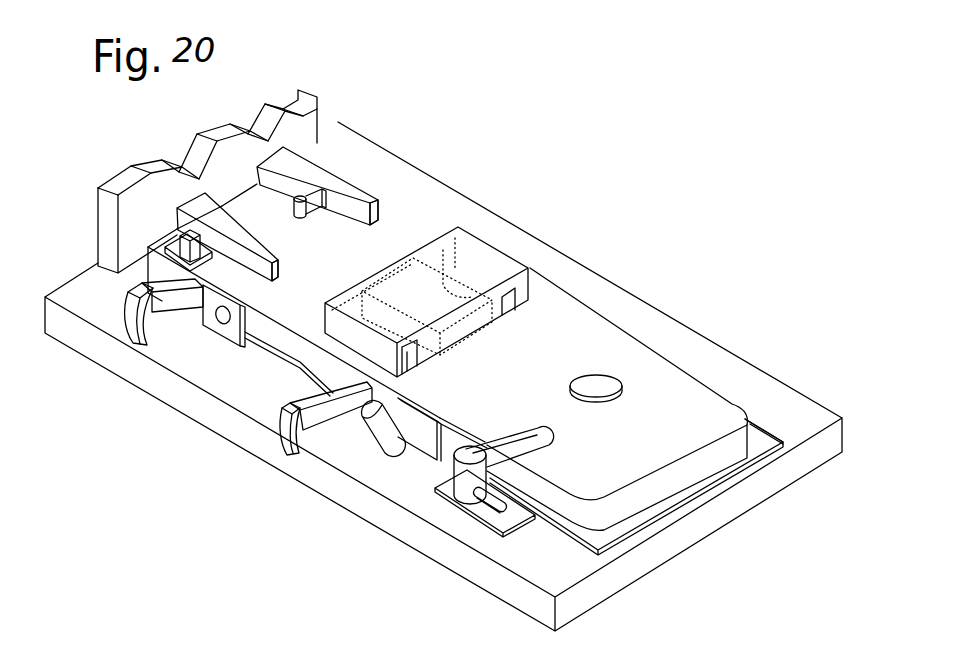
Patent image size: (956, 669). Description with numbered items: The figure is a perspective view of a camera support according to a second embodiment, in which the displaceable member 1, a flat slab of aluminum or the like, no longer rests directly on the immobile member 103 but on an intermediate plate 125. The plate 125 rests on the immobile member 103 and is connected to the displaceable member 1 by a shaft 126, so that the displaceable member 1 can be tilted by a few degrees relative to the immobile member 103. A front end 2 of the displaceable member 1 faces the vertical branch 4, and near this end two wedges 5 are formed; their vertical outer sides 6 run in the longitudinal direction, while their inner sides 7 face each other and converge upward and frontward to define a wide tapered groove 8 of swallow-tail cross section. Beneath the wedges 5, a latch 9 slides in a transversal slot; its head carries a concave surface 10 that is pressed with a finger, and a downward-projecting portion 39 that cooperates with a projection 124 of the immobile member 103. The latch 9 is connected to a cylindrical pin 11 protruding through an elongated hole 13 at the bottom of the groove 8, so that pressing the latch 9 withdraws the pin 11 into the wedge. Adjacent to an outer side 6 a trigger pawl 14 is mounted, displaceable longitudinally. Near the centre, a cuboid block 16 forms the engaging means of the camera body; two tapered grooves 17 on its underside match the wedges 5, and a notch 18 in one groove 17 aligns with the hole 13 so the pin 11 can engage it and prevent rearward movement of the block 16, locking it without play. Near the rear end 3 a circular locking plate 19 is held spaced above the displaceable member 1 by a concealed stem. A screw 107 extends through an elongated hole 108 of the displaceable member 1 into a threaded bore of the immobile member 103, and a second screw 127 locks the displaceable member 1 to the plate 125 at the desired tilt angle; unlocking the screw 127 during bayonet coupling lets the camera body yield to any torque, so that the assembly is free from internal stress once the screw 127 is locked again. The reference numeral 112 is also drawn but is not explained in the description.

The displaceable member 1 is at (565, 498).
The front end 2 is at (147, 266).
The rear end 3 is at (655, 497).
The vertical branch 4 is at (180, 157).
The wedges 5 is at (283, 163).
The vertical outer sides 6 is at (235, 260).
The inner sides 7 is at (280, 267).
The tapered groove 8 is at (257, 218).
The latch 9 is at (180, 316).
The concave surface 10 is at (222, 316).
The cylindrical pin 11 is at (303, 197).
The elongated hole 13 is at (307, 201).
The trigger pawl 14 is at (190, 237).
The cuboid block 16 is at (405, 268).
The tapered grooves 17 is at (311, 369).
The notch 18 is at (455, 292).
The circular locking plate 19 is at (598, 382).
The downward-projecting portion 39 is at (150, 330).
The immobile member 103 is at (200, 408).
The screw 107 is at (467, 478).
The elongated hole 108 is at (490, 508).
The second clamp bracket 112 is at (303, 453).
The projection 124 is at (128, 290).
The plate 125 is at (763, 436).
The shaft 126 is at (224, 323).
The second screw 127 is at (390, 438).